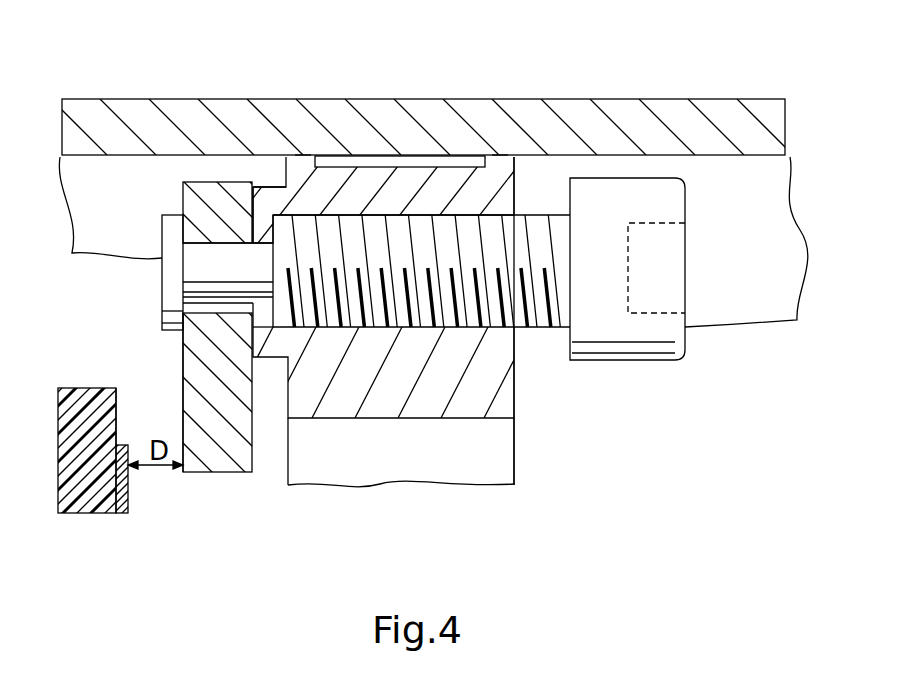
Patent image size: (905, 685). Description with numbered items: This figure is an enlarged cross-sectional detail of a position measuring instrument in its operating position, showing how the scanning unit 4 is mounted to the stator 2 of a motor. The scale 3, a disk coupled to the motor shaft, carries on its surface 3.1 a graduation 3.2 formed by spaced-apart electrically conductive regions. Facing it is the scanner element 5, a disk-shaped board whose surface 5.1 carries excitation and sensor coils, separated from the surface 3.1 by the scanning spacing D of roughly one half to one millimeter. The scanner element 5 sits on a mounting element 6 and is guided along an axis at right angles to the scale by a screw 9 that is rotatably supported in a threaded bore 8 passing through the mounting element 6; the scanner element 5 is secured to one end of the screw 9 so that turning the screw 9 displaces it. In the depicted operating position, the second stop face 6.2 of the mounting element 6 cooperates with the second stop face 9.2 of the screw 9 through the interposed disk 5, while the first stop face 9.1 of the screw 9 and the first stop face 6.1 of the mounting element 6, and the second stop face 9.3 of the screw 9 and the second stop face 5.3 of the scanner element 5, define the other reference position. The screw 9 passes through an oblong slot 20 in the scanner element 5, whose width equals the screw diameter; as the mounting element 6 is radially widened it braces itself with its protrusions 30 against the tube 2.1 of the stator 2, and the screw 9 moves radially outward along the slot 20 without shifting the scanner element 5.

The stator 2 is at (583, 112).
The tube 2.1 is at (746, 160).
The scale 3 is at (77, 513).
The surface 3.1 is at (117, 425).
The graduation 3.2 is at (117, 513).
The scanning unit 4 is at (518, 500).
The scanner element 5 is at (183, 470).
The surface of scanner element 5.1 is at (182, 400).
The second stop face of scanner element 5.3 is at (238, 230).
The mounting element 6 is at (340, 468).
The first stop face of mounting element 6.1 is at (517, 452).
The second stop face of mounting element 6.2 is at (250, 348).
The threaded bore 8 is at (450, 213).
The screw 9 is at (373, 238).
The first stop face of screw 9.1 is at (566, 341).
The second stop face of screw 9.2 is at (185, 325).
The second stop face of screw 9.3 is at (265, 224).
The oblong slot 20 is at (213, 243).
The protrusions 30 is at (304, 153).